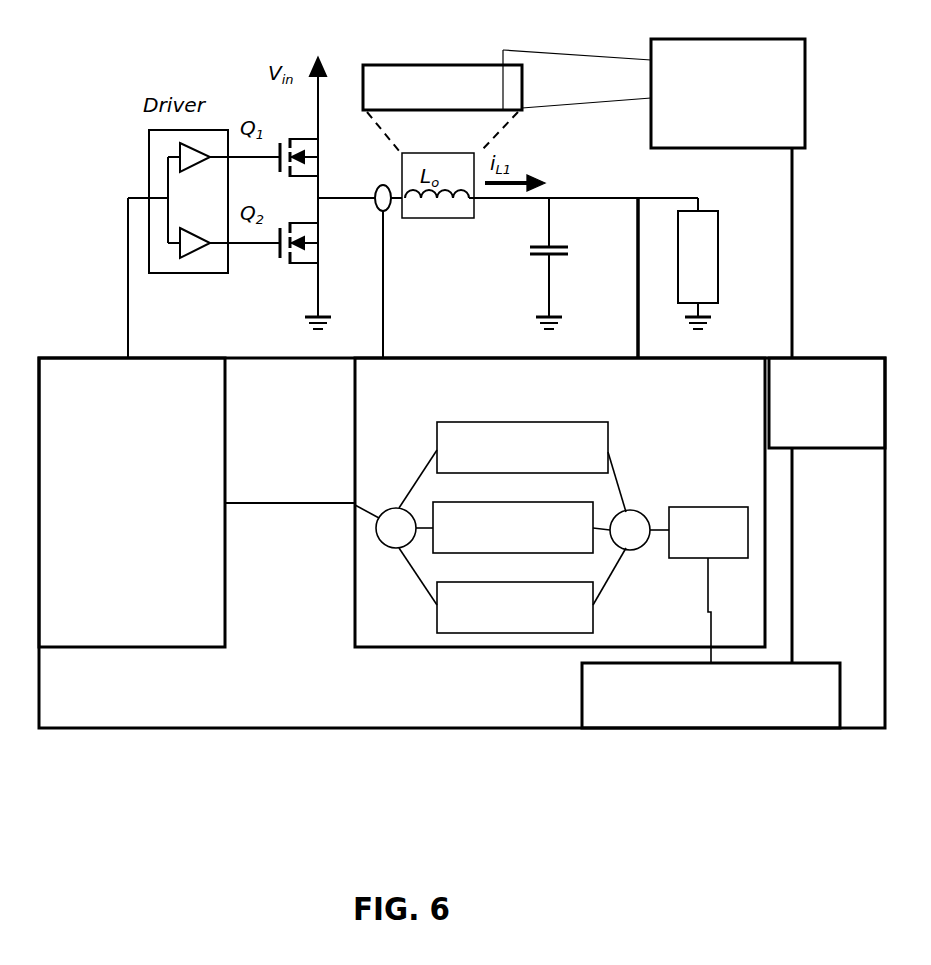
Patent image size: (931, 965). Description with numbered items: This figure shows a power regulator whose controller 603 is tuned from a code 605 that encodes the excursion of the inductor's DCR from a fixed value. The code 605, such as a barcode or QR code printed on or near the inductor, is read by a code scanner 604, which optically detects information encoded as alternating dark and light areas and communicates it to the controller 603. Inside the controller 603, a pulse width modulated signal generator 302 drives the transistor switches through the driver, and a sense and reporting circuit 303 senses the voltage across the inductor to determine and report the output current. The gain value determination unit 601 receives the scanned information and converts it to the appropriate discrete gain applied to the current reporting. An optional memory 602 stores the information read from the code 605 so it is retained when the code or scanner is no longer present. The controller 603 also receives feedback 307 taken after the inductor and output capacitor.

The code 605 is at (432, 64).
The code scanner 604 is at (651, 62).
The feedback 307 is at (622, 197).
The memory 602 is at (815, 357).
The sense and reporting circuit 303 is at (355, 403).
The pulse width modulated signal generator 302 is at (112, 436).
The gain value determination unit 601 is at (800, 662).
The controller 603 is at (405, 714).